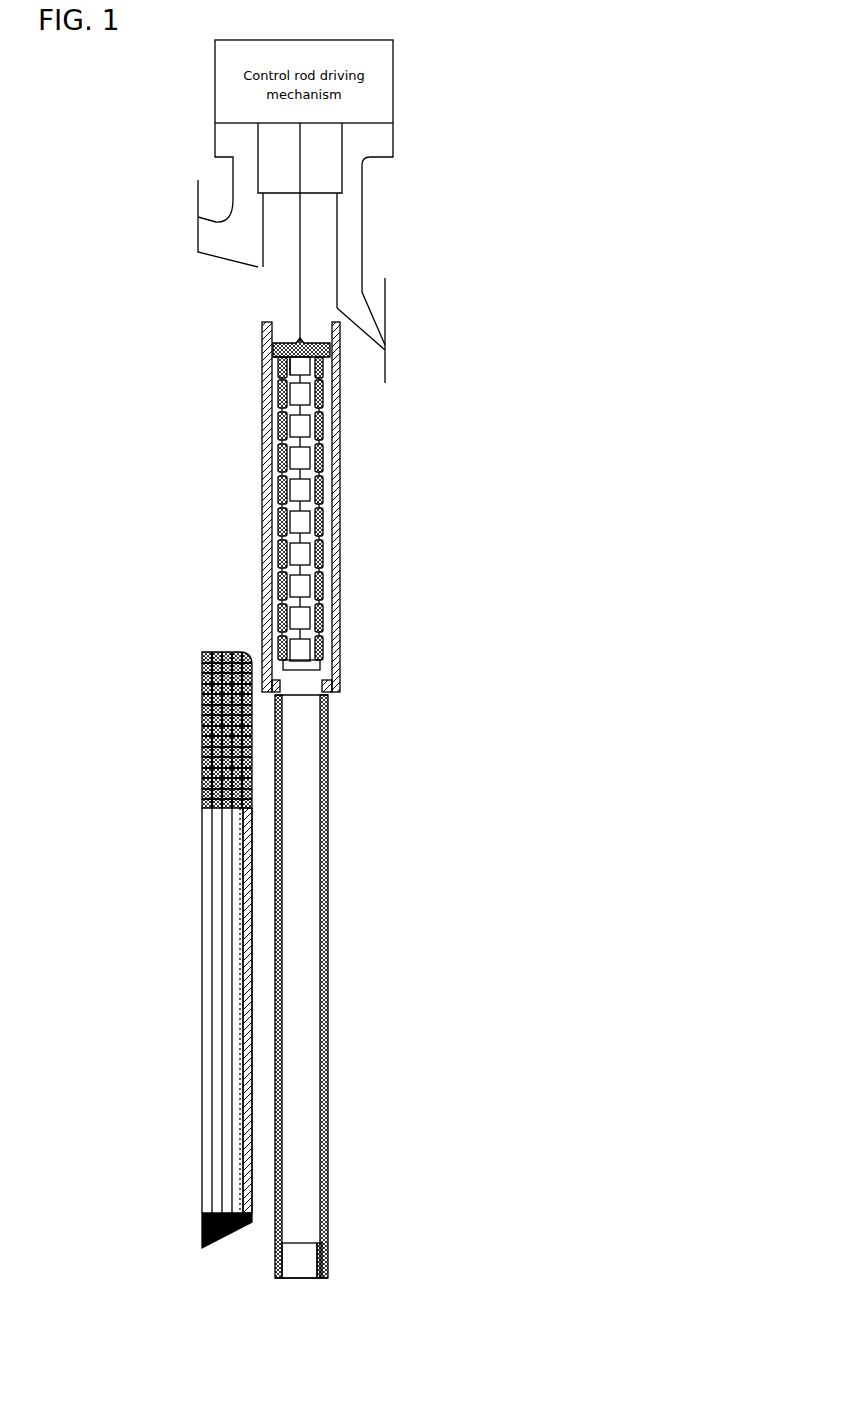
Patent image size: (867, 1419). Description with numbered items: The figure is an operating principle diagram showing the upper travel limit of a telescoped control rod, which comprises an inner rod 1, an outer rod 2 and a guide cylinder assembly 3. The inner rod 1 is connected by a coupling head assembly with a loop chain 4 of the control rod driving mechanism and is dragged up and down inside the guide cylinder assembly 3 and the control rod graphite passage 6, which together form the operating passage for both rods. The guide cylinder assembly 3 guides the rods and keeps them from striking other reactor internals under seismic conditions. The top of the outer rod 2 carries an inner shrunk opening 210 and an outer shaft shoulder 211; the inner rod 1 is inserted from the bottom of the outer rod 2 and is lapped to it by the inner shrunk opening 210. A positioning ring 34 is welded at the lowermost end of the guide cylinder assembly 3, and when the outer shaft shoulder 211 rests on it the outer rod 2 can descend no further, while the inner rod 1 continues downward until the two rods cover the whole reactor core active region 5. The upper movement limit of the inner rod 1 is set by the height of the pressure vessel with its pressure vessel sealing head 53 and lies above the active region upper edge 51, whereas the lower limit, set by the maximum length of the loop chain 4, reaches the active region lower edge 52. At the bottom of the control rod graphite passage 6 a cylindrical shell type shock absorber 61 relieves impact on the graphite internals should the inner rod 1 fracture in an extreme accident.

The inner rod 1 is at (300, 488).
The outer rod 2 is at (318, 558).
The guide cylinder assembly 3 is at (335, 657).
The loop chain 4 is at (300, 310).
The reactor core active region 5 is at (235, 915).
The control rod graphite passage 6 is at (323, 990).
The positioning ring 34 is at (328, 685).
The active region upper edge 51 is at (202, 660).
The active region lower edge 52 is at (202, 1223).
The pressure vessel sealing head 53 is at (350, 202).
The cylindrical shell type shock absorber 61 is at (303, 1258).
The inner shrunk opening 210 is at (277, 358).
The outer shaft shoulder 211 is at (308, 353).